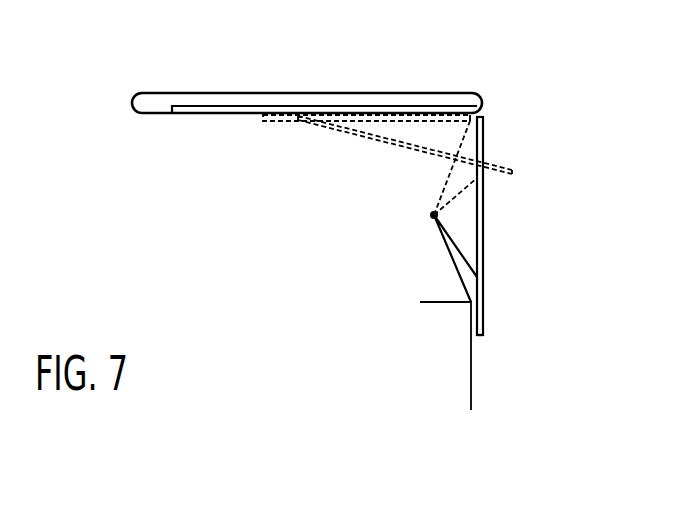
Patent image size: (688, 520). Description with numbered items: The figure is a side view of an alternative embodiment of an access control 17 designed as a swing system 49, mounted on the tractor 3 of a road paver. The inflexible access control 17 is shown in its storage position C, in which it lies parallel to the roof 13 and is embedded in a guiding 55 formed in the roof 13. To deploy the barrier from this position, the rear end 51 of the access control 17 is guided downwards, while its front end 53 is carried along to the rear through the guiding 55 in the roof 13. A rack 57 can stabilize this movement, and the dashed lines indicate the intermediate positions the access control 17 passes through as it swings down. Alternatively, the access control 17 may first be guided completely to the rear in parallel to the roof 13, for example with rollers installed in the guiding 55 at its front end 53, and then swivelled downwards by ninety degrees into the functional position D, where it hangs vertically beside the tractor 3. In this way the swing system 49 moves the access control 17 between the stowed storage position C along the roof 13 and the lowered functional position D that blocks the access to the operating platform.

The roof 13 is at (368, 88).
The guiding 55 is at (256, 94).
The front end 53 is at (262, 132).
The storage position C is at (283, 133).
The rear end 51 is at (472, 128).
The swing system 49 is at (540, 141).
The access control 17 is at (494, 209).
The rack 57 is at (424, 243).
The tractor 3 is at (450, 354).
The functional position D is at (502, 347).